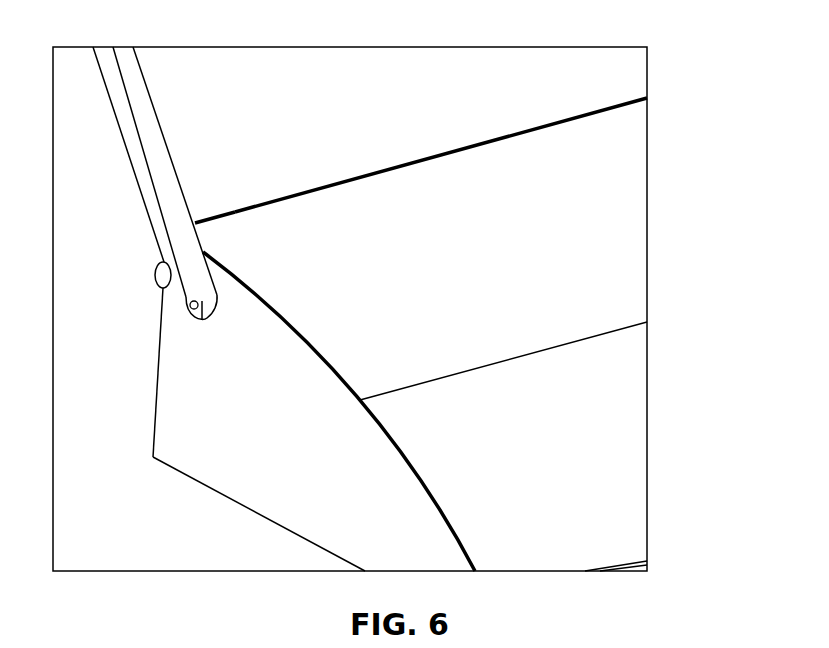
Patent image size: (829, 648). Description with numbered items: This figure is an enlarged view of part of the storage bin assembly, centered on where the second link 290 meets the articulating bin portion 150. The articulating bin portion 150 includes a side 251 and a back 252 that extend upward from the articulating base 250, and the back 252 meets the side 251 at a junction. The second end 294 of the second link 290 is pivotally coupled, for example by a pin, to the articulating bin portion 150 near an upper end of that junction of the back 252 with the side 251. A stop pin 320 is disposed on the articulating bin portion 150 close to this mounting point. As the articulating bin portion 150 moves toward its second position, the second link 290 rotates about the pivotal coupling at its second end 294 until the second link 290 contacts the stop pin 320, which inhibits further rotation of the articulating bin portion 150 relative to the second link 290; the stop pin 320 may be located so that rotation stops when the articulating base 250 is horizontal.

The articulating bin portion 150 is at (518, 91).
The articulating base 250 is at (608, 488).
The side 251 is at (237, 447).
The back 252 is at (338, 206).
The second link 290 is at (158, 123).
The second end 294 is at (218, 200).
The stop pin 320 is at (148, 285).